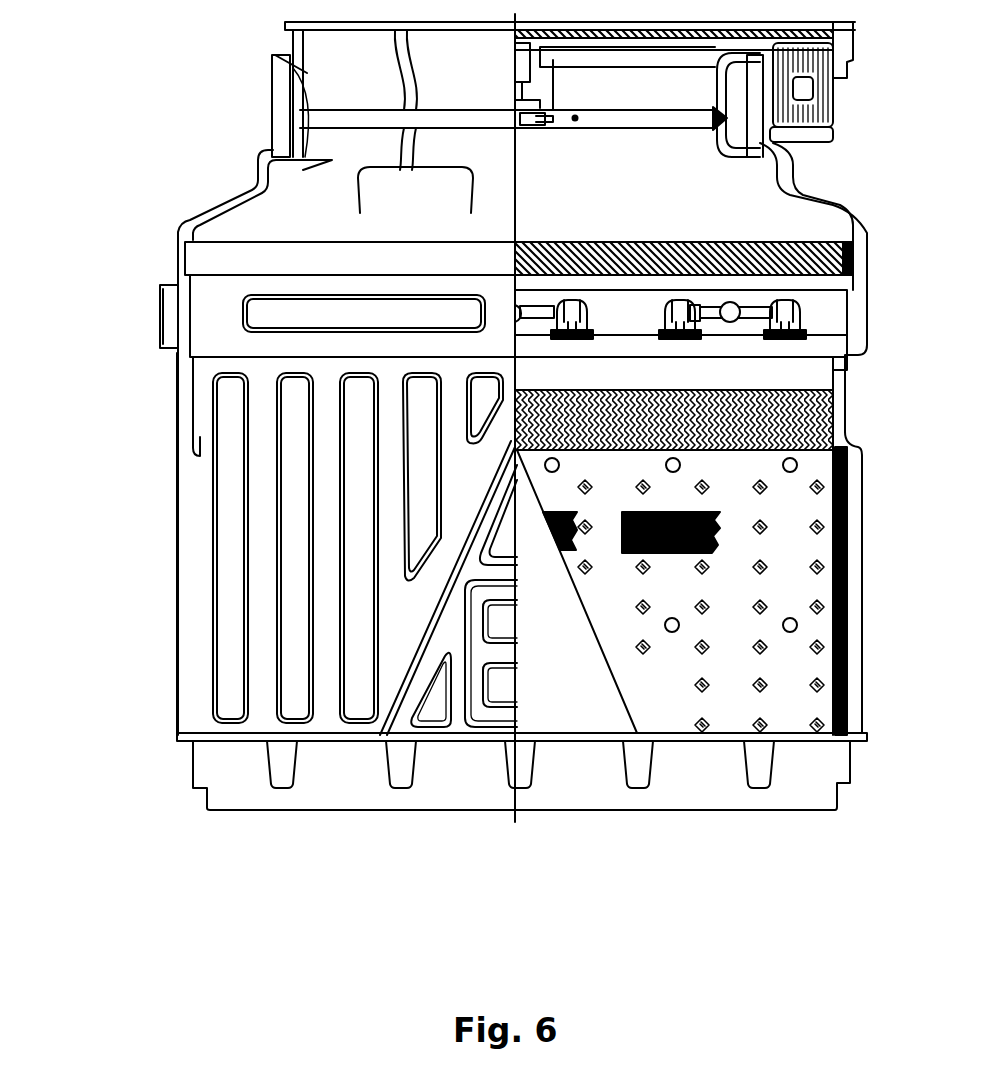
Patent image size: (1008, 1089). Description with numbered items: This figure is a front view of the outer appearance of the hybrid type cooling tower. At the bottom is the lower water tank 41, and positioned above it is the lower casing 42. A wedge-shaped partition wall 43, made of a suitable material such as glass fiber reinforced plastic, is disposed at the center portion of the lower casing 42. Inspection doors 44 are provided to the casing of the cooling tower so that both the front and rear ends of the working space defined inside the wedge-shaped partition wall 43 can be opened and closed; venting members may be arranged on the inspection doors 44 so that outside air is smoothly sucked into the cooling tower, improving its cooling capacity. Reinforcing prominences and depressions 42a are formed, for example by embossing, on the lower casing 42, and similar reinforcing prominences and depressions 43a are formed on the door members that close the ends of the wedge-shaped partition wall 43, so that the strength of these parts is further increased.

The lower water tank 41 is at (222, 770).
The lower casing 42 is at (178, 612).
The reinforcing prominences and depressions 42a is at (230, 540).
The wedge-shaped partition wall 43 is at (396, 722).
The reinforcing prominences and depressions 43a is at (432, 716).
The inspection doors 44 is at (479, 713).